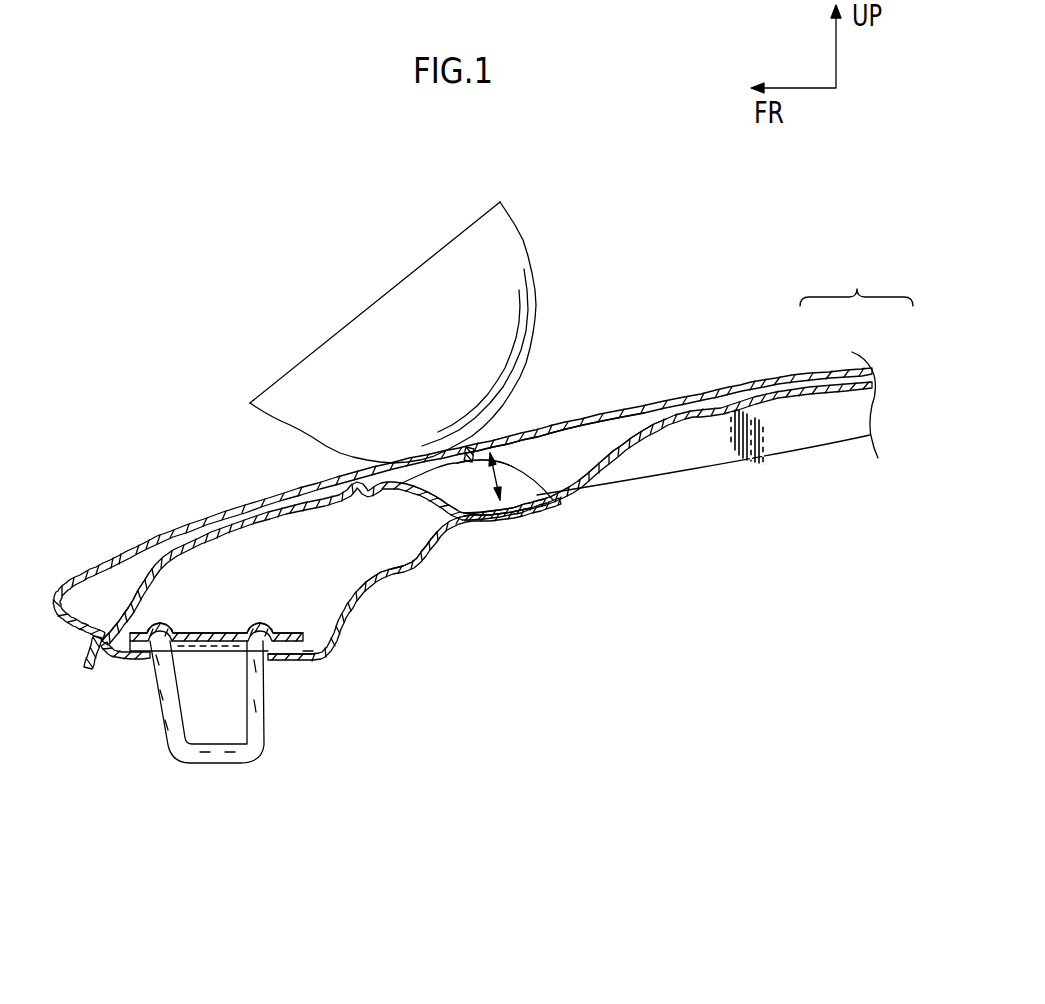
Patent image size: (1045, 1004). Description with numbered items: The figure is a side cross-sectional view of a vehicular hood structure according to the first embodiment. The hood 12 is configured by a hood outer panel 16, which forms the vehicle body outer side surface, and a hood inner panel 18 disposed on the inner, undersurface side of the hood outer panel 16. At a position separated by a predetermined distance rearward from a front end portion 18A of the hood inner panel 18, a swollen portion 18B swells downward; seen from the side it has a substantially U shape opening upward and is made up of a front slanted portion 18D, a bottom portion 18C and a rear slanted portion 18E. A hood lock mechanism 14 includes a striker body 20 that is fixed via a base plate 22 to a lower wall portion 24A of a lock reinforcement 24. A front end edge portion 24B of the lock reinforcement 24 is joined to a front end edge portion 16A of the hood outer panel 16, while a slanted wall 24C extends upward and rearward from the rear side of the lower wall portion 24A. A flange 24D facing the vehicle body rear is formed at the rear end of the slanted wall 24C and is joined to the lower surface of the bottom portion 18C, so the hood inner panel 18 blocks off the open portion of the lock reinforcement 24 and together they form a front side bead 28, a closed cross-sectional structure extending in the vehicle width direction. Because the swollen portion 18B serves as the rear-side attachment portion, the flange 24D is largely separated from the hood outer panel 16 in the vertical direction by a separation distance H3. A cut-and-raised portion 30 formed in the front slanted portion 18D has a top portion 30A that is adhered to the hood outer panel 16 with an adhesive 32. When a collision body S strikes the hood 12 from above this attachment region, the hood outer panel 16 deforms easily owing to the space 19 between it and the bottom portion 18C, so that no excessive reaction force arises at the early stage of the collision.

The collision body S is at (530, 260).
The hood 12 is at (856, 278).
The hood lock mechanism 14 is at (221, 702).
The hood outer panel 16 is at (781, 366).
The front end edge portion of the hood outer panel 16A is at (83, 662).
The hood inner panel 18 is at (479, 470).
The front end portion of the hood inner panel 18A is at (112, 637).
The swollen portion 18B is at (536, 515).
The bottom portion 18C is at (547, 503).
The front slanted portion 18D is at (427, 498).
The rear slanted portion 18E is at (603, 467).
The space 19 is at (540, 476).
The striker body 20 is at (220, 766).
The base plate 22 is at (206, 632).
The lock reinforcement 24 is at (343, 657).
The lower wall portion 24A is at (283, 660).
The front end edge portion of the lock reinforcement 24B is at (100, 655).
The slanted wall 24C is at (426, 558).
The flange 24D is at (482, 522).
The front side bead 28 is at (247, 583).
The cut-and-raised portion 30 is at (517, 472).
The top portion of the cut-and-raised portion 30A is at (511, 468).
The adhesive 32 is at (470, 458).
The separation distance H3 is at (497, 456).